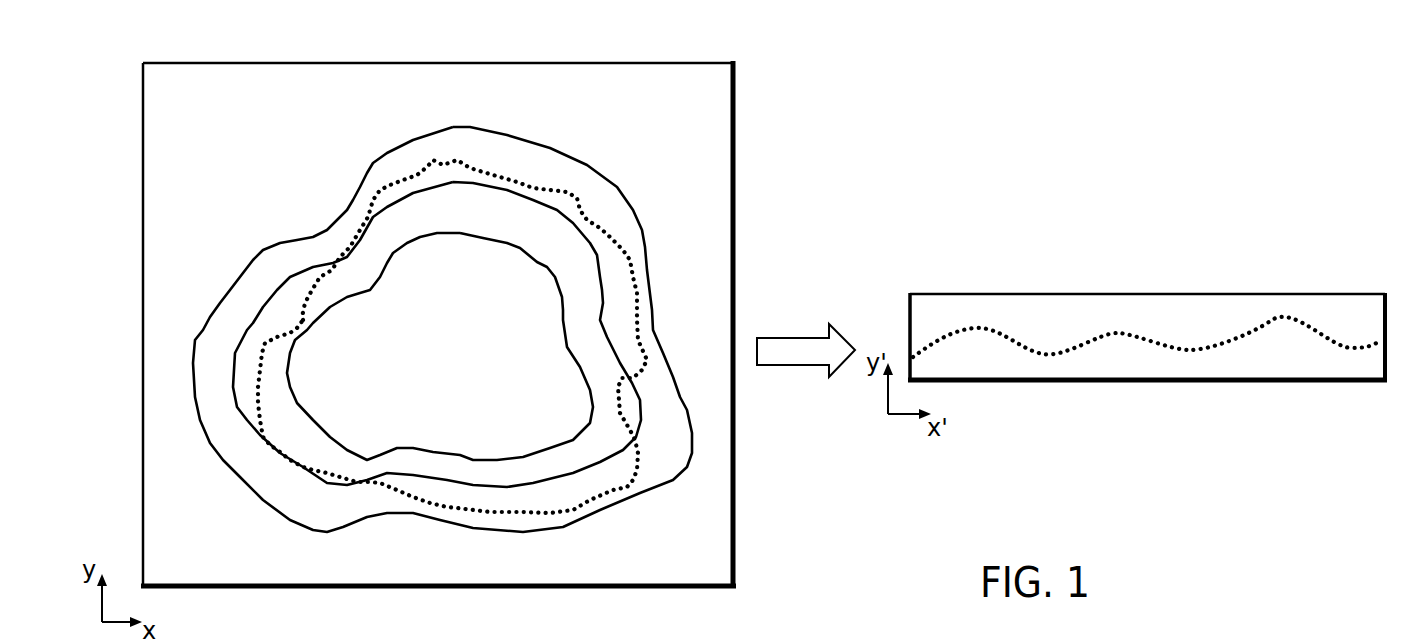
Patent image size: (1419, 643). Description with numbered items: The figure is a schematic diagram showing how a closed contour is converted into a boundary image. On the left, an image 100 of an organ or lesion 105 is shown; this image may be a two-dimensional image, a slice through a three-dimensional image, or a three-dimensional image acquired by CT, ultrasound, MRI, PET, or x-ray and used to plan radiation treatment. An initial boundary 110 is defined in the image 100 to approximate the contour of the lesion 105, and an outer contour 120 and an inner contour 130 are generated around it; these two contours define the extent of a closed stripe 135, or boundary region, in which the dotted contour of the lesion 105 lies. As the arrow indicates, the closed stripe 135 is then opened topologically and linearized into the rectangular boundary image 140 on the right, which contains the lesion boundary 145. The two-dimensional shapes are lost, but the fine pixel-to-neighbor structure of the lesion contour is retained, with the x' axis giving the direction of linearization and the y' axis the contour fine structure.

The image 100 is at (500, 63).
The organ or lesion 105 is at (603, 230).
The initial boundary 110 is at (602, 311).
The outer contour 120 is at (231, 288).
The inner contour 130 is at (309, 323).
The stripe 135 is at (323, 250).
The boundary image 140 is at (1033, 294).
The lesion boundary 145 is at (1172, 345).